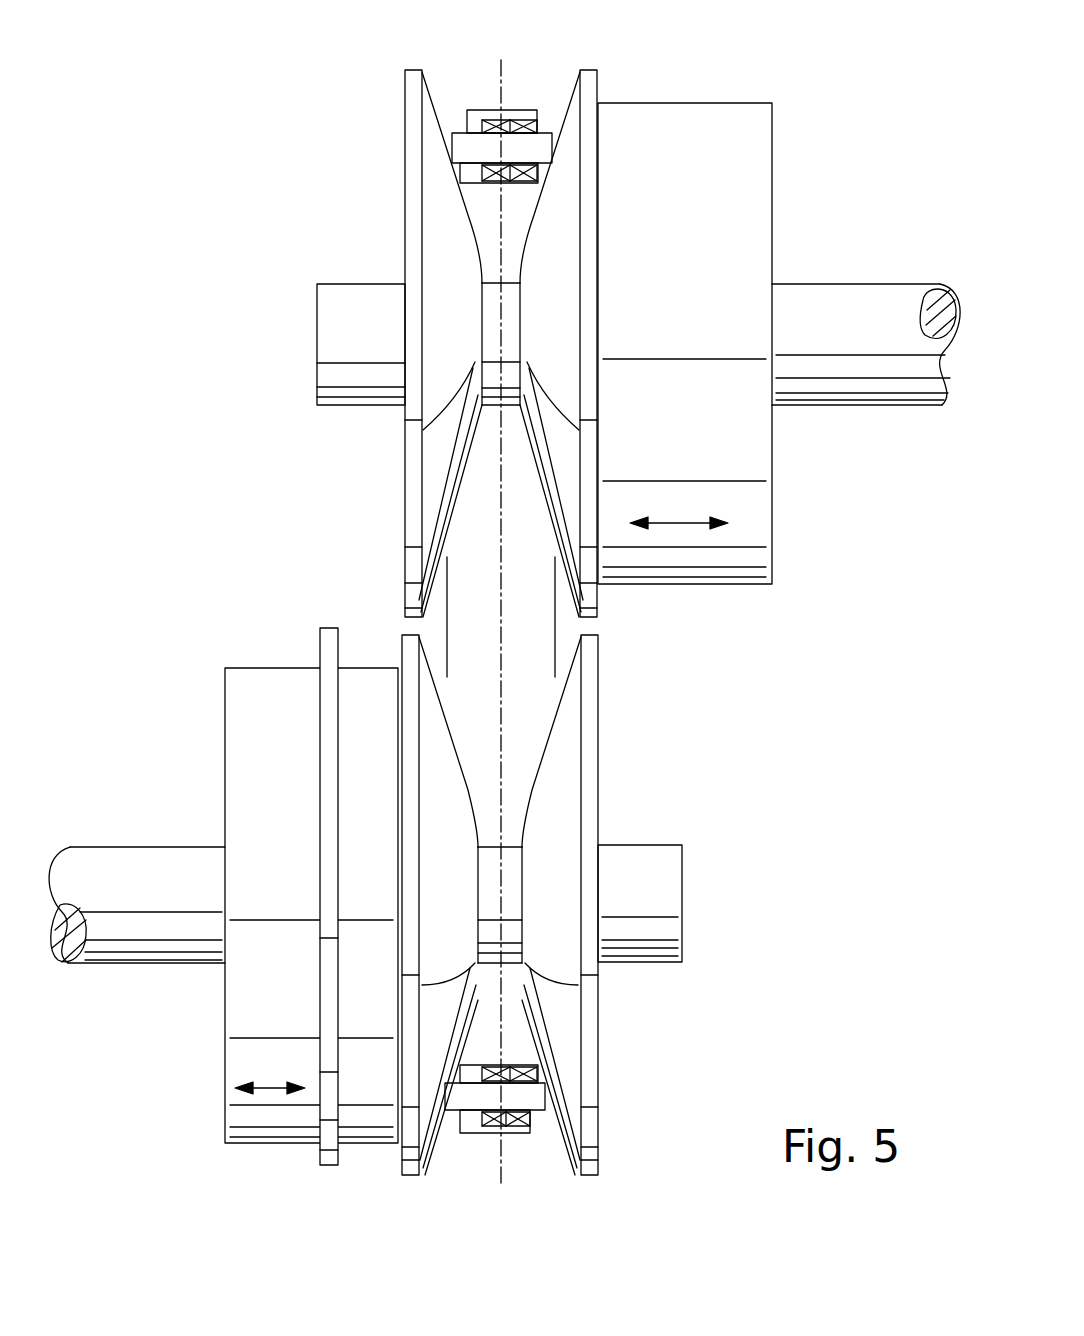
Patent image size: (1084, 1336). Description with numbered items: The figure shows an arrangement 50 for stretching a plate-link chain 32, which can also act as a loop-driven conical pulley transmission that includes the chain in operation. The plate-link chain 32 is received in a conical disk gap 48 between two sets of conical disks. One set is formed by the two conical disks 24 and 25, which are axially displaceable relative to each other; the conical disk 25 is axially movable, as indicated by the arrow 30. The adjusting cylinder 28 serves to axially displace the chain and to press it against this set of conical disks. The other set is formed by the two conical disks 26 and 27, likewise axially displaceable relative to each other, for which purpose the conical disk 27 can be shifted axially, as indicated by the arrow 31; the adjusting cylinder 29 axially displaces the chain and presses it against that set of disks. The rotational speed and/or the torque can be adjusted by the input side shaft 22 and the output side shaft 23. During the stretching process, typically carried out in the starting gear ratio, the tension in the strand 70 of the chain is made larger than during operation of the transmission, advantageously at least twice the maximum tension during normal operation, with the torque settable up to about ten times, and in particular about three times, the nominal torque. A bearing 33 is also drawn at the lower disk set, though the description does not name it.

The arrangement 50 is at (239, 333).
The input side shaft 22 is at (843, 315).
The output side shaft 23 is at (125, 866).
The conical disk 24 is at (435, 212).
The conical disk 25 is at (570, 123).
The conical disk 26 is at (563, 1150).
The conical disk 27 is at (427, 1150).
The adjusting cylinder 28 is at (659, 246).
The adjusting cylinder 29 is at (255, 751).
The arrow 30 is at (678, 523).
The arrow 31 is at (270, 1088).
The plate-link chain 32 is at (478, 107).
The second bearing 33 is at (472, 1095).
The conical disk gap 48 is at (492, 203).
The strand 70 is at (467, 628).